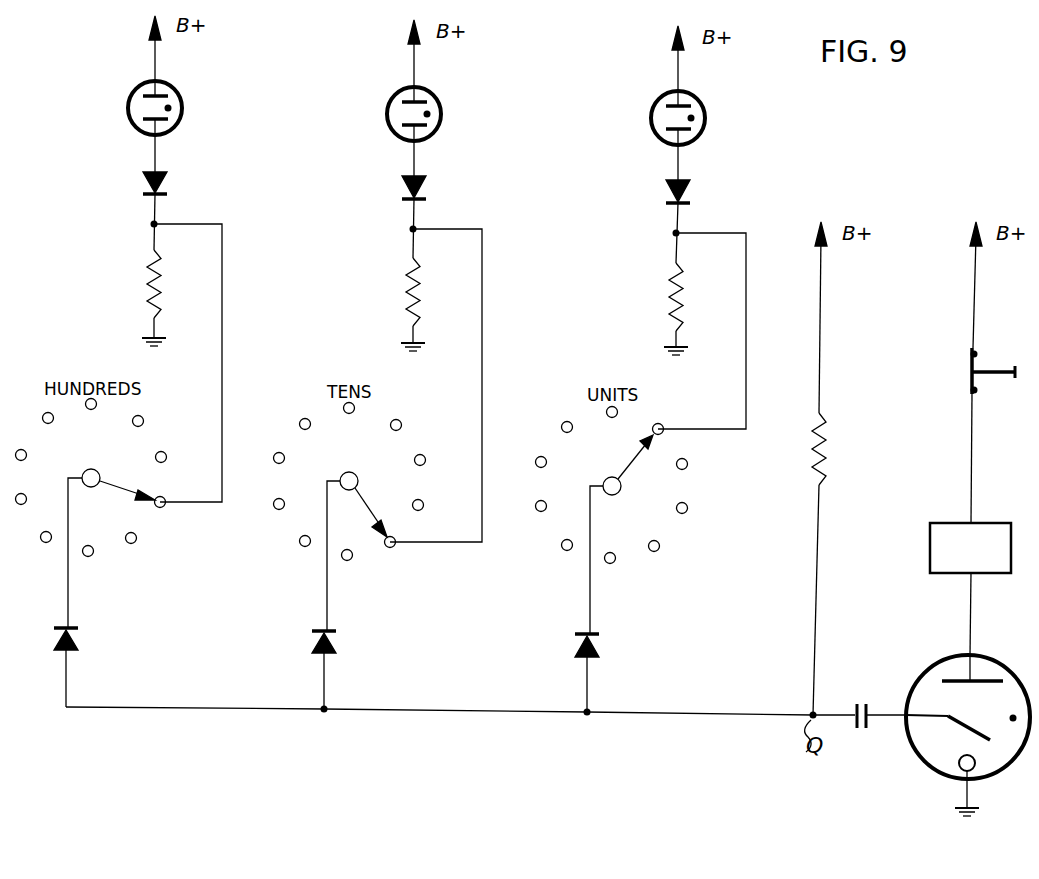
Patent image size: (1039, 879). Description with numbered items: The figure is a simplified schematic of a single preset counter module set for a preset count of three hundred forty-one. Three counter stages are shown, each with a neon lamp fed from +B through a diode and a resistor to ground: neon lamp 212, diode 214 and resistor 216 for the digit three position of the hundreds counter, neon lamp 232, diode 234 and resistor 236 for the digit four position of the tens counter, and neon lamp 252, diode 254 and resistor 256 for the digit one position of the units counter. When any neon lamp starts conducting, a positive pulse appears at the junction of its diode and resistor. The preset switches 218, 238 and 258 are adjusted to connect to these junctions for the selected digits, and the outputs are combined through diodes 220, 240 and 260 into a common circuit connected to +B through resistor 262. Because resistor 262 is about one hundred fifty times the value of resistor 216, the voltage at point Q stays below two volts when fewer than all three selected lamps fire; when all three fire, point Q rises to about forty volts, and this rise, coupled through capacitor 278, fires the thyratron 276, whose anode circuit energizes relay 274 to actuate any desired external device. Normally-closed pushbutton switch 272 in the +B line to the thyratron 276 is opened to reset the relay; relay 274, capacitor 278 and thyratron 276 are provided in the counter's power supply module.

The neon lamp 212 is at (183, 110).
The diode 214 is at (163, 183).
The resistor 216 is at (148, 290).
The preset switch 218 is at (80, 467).
The diode 220 is at (74, 643).
The neon lamp 232 is at (442, 116).
The diode 234 is at (422, 187).
The resistor 236 is at (407, 297).
The preset switch 238 is at (340, 470).
The diode 240 is at (334, 648).
The neon lamp 252 is at (706, 120).
The diode 254 is at (686, 191).
The resistor 256 is at (670, 305).
The preset switch 258 is at (601, 475).
The diode 260 is at (597, 651).
The resistor 262 is at (826, 460).
The normally-closed pushbutton switch 272 is at (965, 372).
The relay 274 is at (930, 530).
The thyratron 276 is at (942, 672).
The capacitor 278 is at (852, 700).